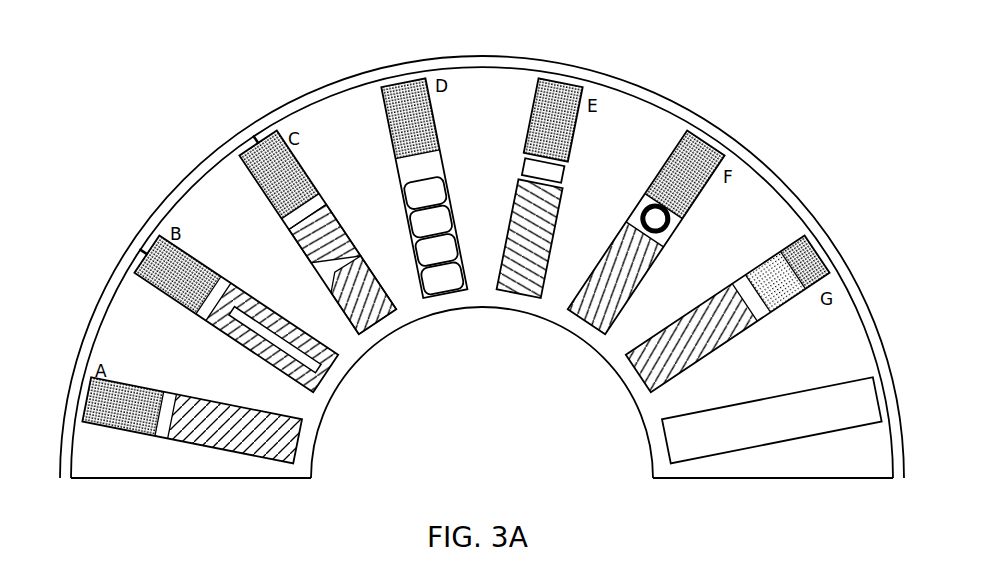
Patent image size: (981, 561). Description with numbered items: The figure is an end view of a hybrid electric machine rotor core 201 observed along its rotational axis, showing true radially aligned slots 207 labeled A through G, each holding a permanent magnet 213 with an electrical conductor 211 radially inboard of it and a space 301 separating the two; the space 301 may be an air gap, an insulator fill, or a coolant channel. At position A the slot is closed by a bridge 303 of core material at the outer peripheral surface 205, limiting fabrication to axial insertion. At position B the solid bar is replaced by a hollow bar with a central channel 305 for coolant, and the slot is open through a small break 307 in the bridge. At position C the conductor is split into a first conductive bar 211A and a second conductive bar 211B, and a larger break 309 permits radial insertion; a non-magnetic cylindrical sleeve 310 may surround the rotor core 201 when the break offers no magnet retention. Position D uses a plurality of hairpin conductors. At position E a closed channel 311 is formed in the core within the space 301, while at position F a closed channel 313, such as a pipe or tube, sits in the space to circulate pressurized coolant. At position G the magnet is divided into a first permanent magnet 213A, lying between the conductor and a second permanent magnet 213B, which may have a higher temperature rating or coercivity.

The rotor core 201 is at (205, 190).
The outer peripheral surface 205 is at (345, 95).
The slot 207 is at (395, 337).
The electrical conductor 211 is at (428, 248).
The first conductive bar 211A is at (362, 317).
The second conductive bar 211B is at (297, 246).
The permanent magnet 213 is at (406, 153).
The first permanent magnet 213A is at (765, 273).
The second permanent magnet 213B is at (788, 250).
The space 301 is at (230, 288).
The bridge 303 is at (80, 397).
The central channel 305 is at (337, 365).
The break 307 is at (141, 257).
The break 309 is at (256, 135).
The cylindrical sleeve 310 is at (185, 177).
The closed channel 311 is at (563, 170).
The closed channel 313 is at (640, 213).